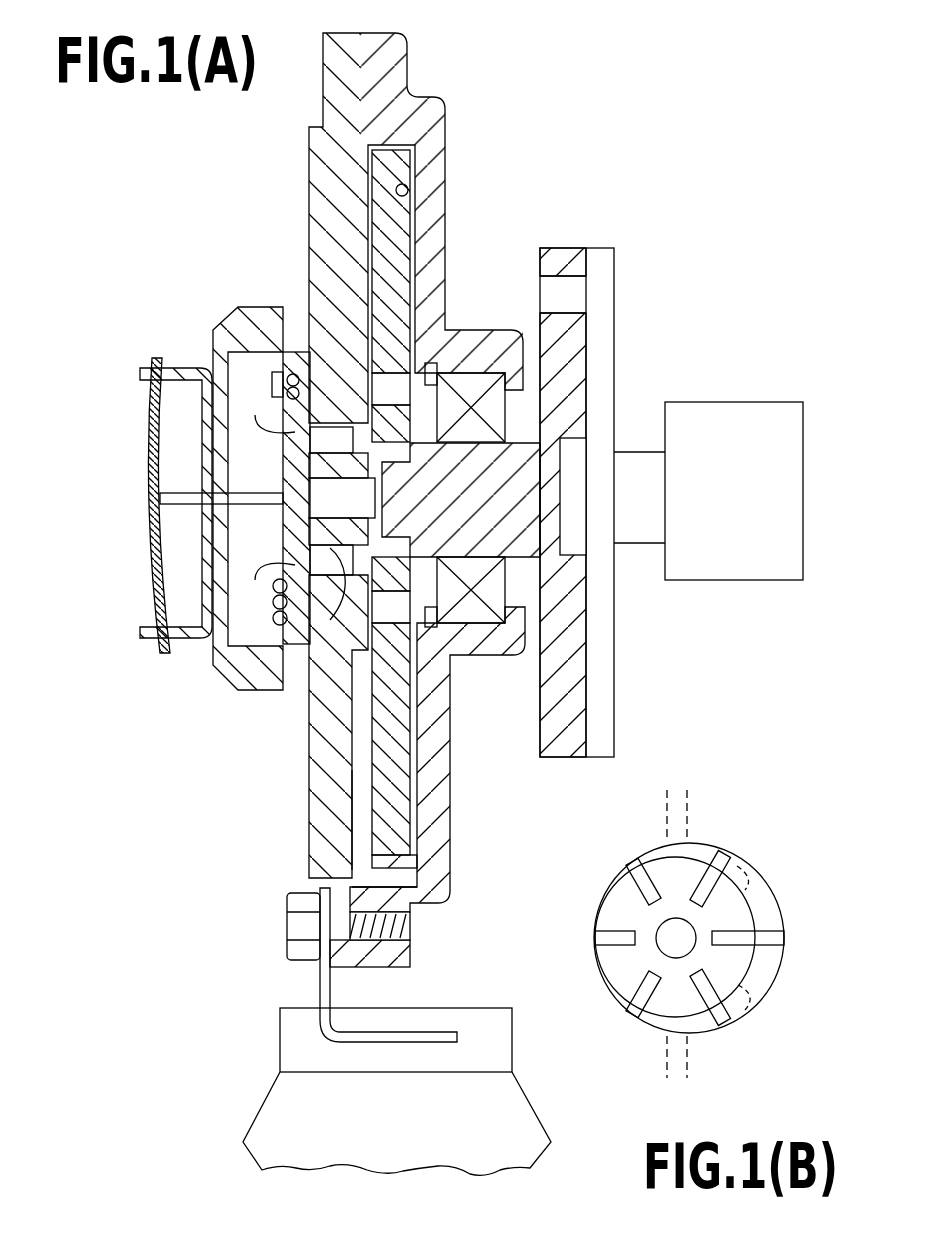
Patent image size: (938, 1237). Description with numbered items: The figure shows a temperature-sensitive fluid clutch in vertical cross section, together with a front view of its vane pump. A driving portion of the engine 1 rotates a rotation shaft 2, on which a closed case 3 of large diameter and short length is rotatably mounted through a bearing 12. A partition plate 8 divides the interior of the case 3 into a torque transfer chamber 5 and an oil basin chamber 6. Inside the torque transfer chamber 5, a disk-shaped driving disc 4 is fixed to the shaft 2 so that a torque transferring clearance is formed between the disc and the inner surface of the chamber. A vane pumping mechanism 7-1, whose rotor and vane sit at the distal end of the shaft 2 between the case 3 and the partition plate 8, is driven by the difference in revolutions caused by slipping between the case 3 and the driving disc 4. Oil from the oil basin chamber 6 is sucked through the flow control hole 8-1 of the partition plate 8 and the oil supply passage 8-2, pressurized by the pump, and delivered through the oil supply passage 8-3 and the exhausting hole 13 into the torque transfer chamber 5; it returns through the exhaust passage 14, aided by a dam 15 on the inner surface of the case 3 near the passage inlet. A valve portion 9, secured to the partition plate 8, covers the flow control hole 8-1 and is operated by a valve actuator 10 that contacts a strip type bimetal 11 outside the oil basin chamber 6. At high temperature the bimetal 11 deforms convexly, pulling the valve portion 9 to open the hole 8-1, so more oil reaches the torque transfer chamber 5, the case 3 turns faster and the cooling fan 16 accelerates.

In FIG. 1A, the driving portion of the engine 1 is at (726, 425).
In FIG. 1A, the rotation shaft 2 is at (553, 258).
In FIG. 1A, the closed case 3 is at (433, 73).
In FIG. 1A, the driving disc 4 is at (400, 232).
In FIG. 1A, the torque transfer chamber 5 is at (405, 188).
In FIG. 1A, the oil basin chamber 6 is at (325, 625).
In FIG. 1A, the vane pumping mechanism 7-1 is at (325, 548).
In FIG. 1B, the vane pumping mechanism 7-1 is at (737, 1047).
In FIG. 1A, the partition plate 8 is at (300, 660).
In FIG. 1A, the flow control hole 8-1 is at (288, 356).
In FIG. 1A, the oil supply passage 8-2 is at (297, 430).
In FIG. 1B, the oil supply passage 8-2 is at (688, 800).
In FIG. 1A, the oil supply passage 8-3 is at (280, 606).
In FIG. 1B, the oil supply passage 8-3 is at (672, 1058).
In FIG. 1A, the valve portion 9 is at (232, 342).
In FIG. 1A, the valve actuator 10 is at (185, 504).
In FIG. 1A, the strip type bimetal 11 is at (153, 458).
In FIG. 1A, the bearing 12 is at (472, 383).
In FIG. 1A, the exhausting hole 13 is at (362, 640).
In FIG. 1A, the exhaust passage 14 is at (346, 805).
In FIG. 1A, the dam 15 is at (418, 860).
In FIG. 1A, the cooling fan 16 is at (288, 1115).